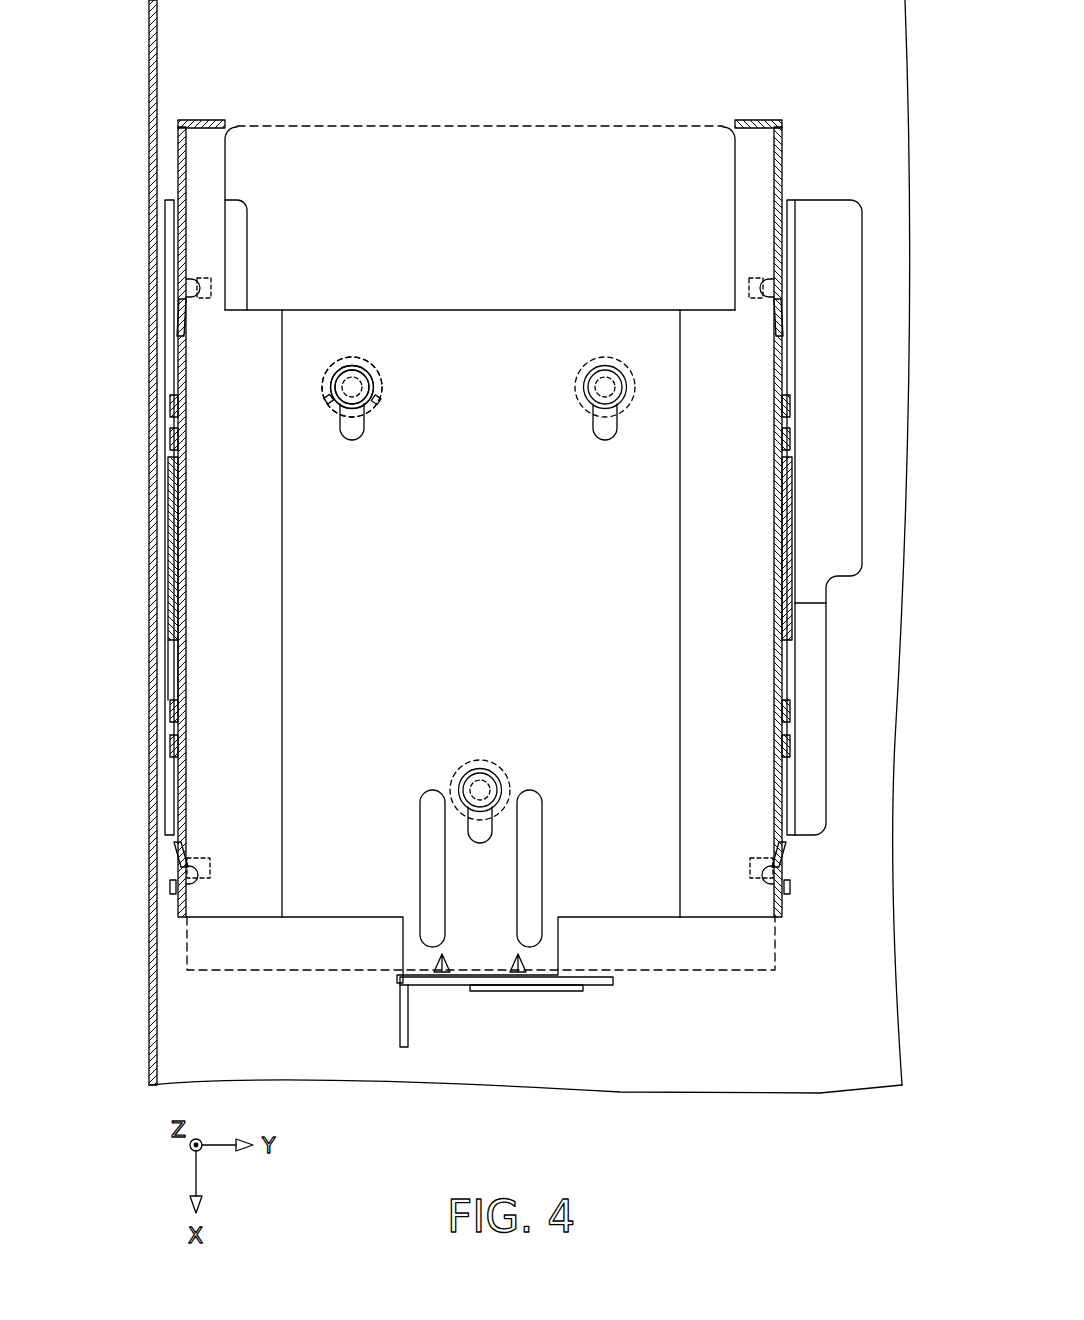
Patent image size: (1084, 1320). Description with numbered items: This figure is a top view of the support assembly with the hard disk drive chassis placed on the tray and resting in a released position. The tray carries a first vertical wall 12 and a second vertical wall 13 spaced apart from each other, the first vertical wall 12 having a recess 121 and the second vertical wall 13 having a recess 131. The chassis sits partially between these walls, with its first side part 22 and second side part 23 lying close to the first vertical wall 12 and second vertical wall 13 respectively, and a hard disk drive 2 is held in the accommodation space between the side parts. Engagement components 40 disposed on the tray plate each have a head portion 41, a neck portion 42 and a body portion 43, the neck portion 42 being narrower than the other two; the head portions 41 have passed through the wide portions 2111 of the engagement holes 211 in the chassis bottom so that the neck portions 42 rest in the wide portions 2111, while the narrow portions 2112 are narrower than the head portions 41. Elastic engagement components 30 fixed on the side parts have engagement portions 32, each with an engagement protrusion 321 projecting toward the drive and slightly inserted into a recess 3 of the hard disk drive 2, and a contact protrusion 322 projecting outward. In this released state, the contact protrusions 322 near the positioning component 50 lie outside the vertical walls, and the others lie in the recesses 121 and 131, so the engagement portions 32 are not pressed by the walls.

The hard disk drive 2 is at (466, 126).
The recess 3 is at (215, 305).
The first vertical wall 12 is at (157, 543).
The second vertical wall 13 is at (795, 518).
The first side part 22 is at (186, 530).
The second side part 23 is at (774, 528).
The elastic engagement component 30 is at (483, 592).
The engagement portion 32 is at (170, 887).
The engagement component 40 is at (361, 322).
The head portion 41 is at (336, 374).
The neck portion 42 is at (356, 380).
The body portion 43 is at (370, 343).
The positioning component 50 is at (402, 1035).
The recess 121 is at (166, 331).
The recess 131 is at (797, 331).
The engagement hole 211 is at (481, 613).
The wide portion 2111 is at (376, 408).
The narrow portion 2112 is at (335, 458).
The engagement protrusion 321 is at (196, 290).
The contact protrusion 322 is at (178, 313).